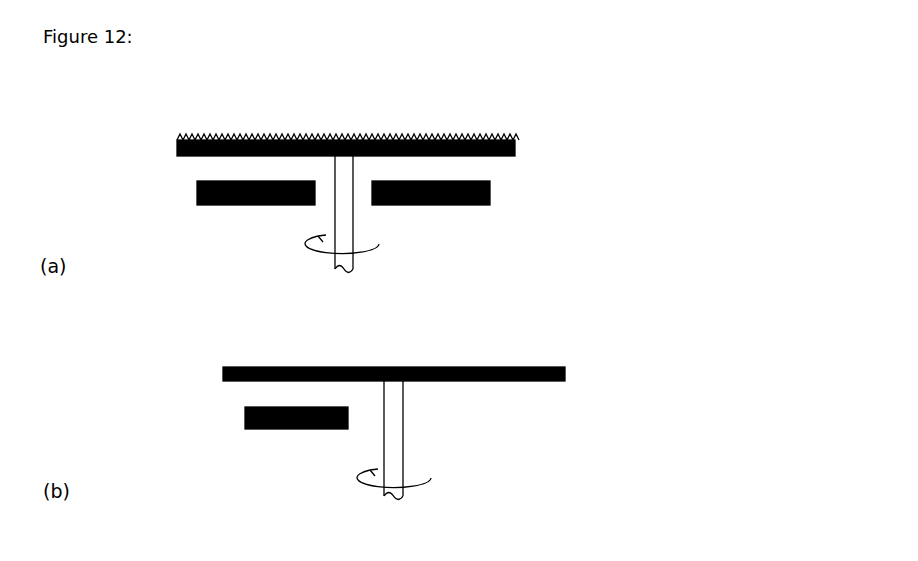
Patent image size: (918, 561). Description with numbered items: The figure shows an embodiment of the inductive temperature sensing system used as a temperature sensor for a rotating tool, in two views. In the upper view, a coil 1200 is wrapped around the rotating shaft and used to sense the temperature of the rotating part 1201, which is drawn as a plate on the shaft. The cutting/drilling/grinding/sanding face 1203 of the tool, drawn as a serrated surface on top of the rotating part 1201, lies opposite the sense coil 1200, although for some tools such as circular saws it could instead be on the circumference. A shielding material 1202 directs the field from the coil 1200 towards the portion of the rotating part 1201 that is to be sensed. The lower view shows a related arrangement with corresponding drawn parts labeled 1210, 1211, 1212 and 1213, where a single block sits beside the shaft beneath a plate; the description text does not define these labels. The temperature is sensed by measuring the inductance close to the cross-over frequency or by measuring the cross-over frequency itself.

The coil 1200 is at (419, 221).
The rotating part 1201 is at (515, 144).
The shielding material 1202 is at (470, 205).
The cutting/drilling/grinding/sanding face 1203 is at (470, 138).
The magnet block 1210 is at (229, 447).
The plate 1211 is at (432, 366).
The coil block 1212 is at (265, 429).
The rotary stage assembly 1213 is at (483, 342).